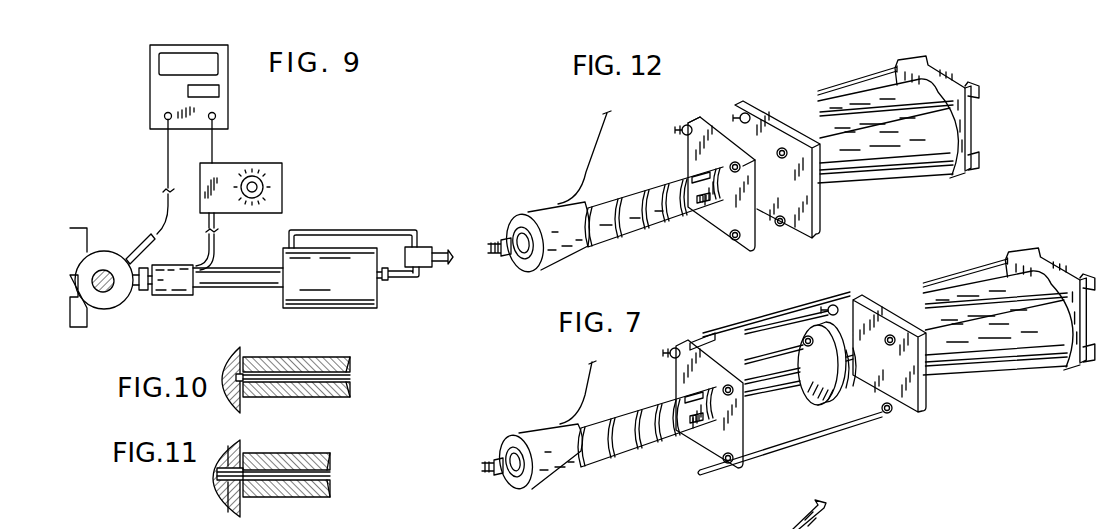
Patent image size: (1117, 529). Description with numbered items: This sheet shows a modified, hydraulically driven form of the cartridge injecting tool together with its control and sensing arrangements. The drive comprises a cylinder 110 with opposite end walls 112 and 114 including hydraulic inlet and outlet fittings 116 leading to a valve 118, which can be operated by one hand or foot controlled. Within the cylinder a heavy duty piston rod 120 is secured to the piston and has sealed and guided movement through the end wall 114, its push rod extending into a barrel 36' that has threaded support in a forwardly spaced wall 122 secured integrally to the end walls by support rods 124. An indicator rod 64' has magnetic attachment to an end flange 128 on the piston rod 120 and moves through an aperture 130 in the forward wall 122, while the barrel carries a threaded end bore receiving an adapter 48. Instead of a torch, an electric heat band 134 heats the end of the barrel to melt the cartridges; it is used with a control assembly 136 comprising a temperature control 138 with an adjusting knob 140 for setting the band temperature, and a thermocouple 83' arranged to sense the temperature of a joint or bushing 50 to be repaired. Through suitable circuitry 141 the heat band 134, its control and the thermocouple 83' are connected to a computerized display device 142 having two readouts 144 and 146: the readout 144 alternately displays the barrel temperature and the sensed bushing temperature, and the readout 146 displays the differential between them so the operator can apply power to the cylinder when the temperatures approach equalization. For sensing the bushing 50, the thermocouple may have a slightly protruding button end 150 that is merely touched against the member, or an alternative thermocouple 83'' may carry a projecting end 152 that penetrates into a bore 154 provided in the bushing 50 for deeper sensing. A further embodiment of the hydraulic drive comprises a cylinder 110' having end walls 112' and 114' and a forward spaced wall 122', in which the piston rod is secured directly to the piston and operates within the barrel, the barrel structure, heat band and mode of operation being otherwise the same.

In FIG. 9, the bushing 50 is at (107, 242).
In FIG. 10, the bushing 50 is at (233, 350).
In FIG. 11, the bushing 50 is at (227, 513).
In FIG. 9, the thermocouple 83' is at (139, 233).
In FIG. 10, the thermocouple 83' is at (296, 362).
In FIG. 11, the thermocouple 83'' is at (288, 459).
In FIG. 9, the adapter 48 is at (143, 292).
In FIG. 9, the electric heat band 134 is at (179, 296).
In FIG. 12, the electric heat band 134 is at (548, 208).
In FIG. 7, the electric heat band 134 is at (535, 430).
In FIG. 9, the hydraulic inlet and outlet fittings 116 is at (390, 232).
In FIG. 7, the hydraulic inlet and outlet fittings 116 is at (795, 521).
In FIG. 9, the valve 118 is at (426, 250).
In FIG. 9, the control assembly 136 is at (252, 135).
In FIG. 9, the temperature control 138 is at (283, 175).
In FIG. 9, the adjusting knob 140 is at (255, 178).
In FIG. 9, the circuitry 141 is at (207, 145).
In FIG. 9, the computerized display device 142 is at (228, 85).
In FIG. 9, the readout 144 is at (160, 63).
In FIG. 9, the readout 146 is at (187, 88).
In FIG. 10, the button end 150 is at (224, 371).
In FIG. 11, the projecting end 152 is at (222, 455).
In FIG. 11, the bore 154 is at (215, 490).
In FIG. 7, the cylinder 110 is at (998, 308).
In FIG. 12, the cylinder 110' is at (883, 120).
In FIG. 7, the end wall 112 is at (1049, 298).
In FIG. 12, the end wall 112' is at (943, 111).
In FIG. 7, the end wall 114 is at (873, 338).
In FIG. 12, the end wall 114' is at (776, 152).
In FIG. 7, the forward spaced wall 122 is at (620, 434).
In FIG. 12, the forward spaced wall 122' is at (715, 170).
In FIG. 7, the support rods 124 is at (810, 432).
In FIG. 7, the end flange 128 is at (820, 323).
In FIG. 7, the piston rod 120 is at (862, 378).
In FIG. 7, the aperture 130 is at (692, 347).
In FIG. 7, the indicator rod 64' is at (778, 344).
In FIG. 12, the barrel 36' is at (654, 207).
In FIG. 7, the barrel 36' is at (647, 427).